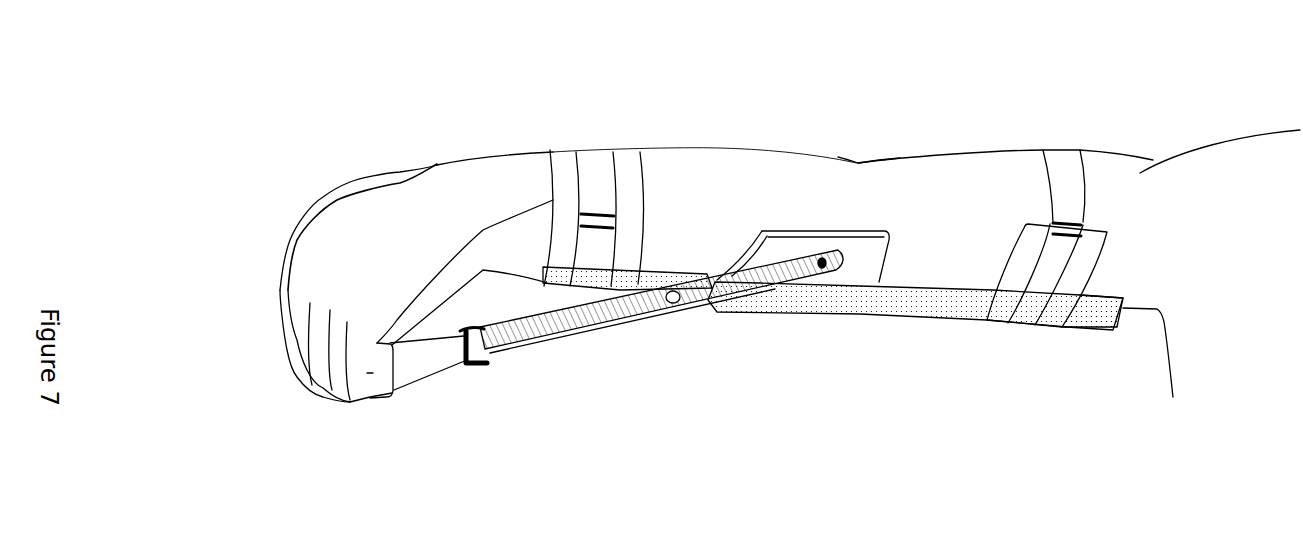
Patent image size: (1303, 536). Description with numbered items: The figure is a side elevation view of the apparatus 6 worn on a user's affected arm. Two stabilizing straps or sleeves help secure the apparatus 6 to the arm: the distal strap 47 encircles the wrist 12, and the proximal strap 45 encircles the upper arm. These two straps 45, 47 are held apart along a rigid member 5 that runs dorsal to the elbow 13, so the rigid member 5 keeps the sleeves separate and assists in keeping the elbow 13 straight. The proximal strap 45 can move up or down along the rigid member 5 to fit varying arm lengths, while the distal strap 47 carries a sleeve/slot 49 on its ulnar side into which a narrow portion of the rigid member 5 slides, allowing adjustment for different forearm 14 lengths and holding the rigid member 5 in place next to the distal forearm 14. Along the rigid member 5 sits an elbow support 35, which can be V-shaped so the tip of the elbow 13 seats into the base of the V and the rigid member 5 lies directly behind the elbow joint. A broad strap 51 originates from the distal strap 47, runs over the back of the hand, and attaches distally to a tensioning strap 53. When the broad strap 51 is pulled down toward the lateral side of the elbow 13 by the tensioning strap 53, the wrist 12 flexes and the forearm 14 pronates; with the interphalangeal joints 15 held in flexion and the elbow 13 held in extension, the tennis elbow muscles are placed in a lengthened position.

The apparatus 6 is at (478, 20).
The broad strap 51 is at (357, 175).
The interphalangeal joints 15 is at (297, 413).
The wrist 12 is at (512, 152).
The forearm 14 is at (723, 144).
The elbow 13 is at (855, 151).
The tensioning strap 53 is at (536, 348).
The rigid member 5 is at (904, 312).
The sleeve/slot 49 is at (588, 282).
The elbow support 35 is at (829, 230).
The distal strap 47 is at (548, 147).
The proximal strap 45 is at (1095, 131).